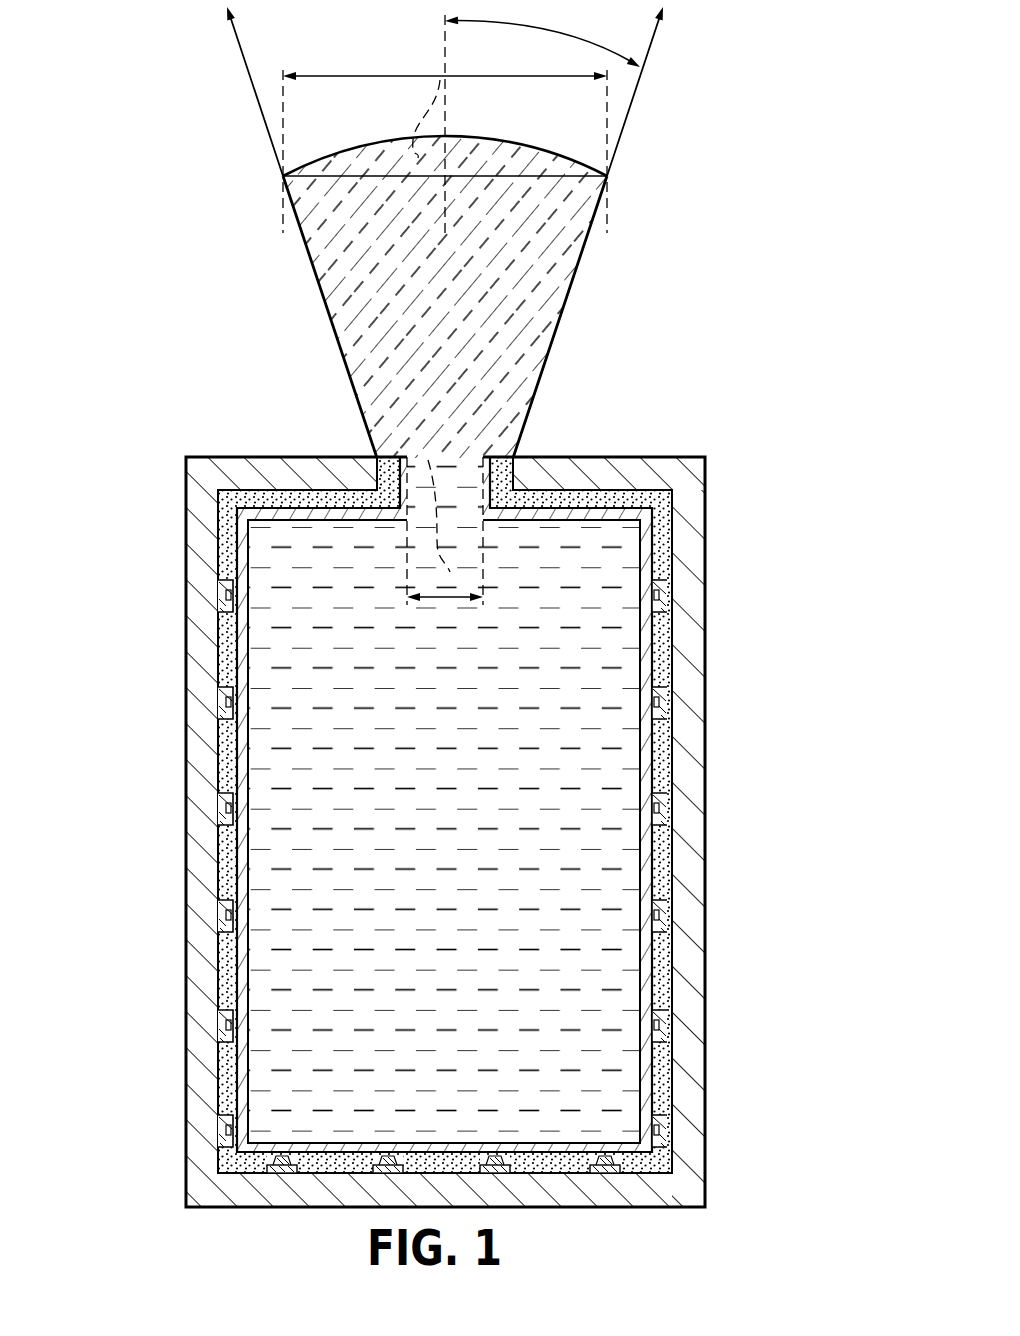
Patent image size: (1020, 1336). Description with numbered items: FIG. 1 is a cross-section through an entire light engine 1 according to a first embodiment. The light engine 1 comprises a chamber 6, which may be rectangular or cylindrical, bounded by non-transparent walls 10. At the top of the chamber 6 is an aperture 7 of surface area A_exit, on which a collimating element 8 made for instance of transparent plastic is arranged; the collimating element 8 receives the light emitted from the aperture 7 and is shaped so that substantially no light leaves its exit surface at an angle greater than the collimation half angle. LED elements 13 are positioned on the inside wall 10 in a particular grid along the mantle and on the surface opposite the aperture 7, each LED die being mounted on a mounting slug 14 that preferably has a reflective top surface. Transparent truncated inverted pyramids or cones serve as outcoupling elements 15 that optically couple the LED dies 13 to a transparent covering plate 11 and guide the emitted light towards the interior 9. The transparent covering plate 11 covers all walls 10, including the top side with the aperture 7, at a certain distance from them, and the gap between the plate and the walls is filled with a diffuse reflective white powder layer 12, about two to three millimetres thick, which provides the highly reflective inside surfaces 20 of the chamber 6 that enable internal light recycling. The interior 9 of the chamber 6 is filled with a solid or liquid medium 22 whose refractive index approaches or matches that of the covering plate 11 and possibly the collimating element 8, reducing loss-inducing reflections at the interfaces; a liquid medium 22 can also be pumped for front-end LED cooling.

The light engine 1 is at (707, 230).
The chamber 6 is at (657, 470).
The aperture 7 is at (459, 515).
The collimating element 8 is at (497, 333).
The interior 9 is at (562, 892).
The inside wall 10 is at (202, 648).
The transparent covering plate 11 is at (240, 1080).
The diffuse reflective powder layer 12 is at (218, 753).
The LED elements 13 is at (220, 818).
The mounting slugs 14 is at (220, 1030).
The outcoupling elements 15 is at (227, 930).
The inside surfaces 20 is at (260, 545).
The medium 22 is at (580, 785).